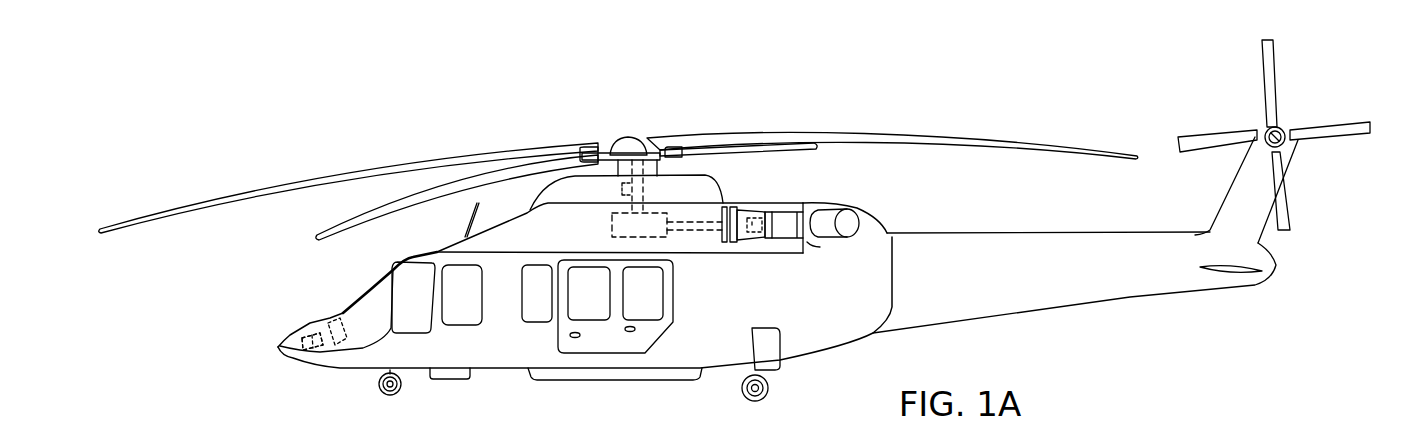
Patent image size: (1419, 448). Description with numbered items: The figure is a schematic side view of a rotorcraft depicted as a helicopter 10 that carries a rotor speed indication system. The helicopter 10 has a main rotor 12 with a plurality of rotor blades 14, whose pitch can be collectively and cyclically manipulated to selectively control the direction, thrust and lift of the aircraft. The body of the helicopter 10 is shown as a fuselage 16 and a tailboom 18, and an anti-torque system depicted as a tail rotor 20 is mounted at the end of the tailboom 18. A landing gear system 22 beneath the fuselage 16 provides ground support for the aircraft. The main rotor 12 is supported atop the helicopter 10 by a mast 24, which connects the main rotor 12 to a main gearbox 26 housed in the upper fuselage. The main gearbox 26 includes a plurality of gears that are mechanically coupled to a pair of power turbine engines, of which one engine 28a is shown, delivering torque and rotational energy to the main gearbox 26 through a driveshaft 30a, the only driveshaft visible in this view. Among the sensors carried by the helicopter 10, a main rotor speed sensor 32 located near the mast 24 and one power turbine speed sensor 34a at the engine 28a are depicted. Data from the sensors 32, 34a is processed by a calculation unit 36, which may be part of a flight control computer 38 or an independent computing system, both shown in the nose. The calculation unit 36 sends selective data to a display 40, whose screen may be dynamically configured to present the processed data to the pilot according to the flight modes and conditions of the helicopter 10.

The helicopter 10 is at (514, 110).
The main rotor 12 is at (940, 137).
The rotor blades 14 is at (785, 153).
The fuselage 16 is at (322, 369).
The tailboom 18 is at (1133, 297).
The tail rotor 20 is at (1335, 120).
The landing gear system 22 is at (770, 392).
The mast 24 is at (598, 147).
The main gearbox 26 is at (640, 237).
The engine 28a is at (795, 242).
The driveshaft 30a is at (693, 232).
The main rotor speed sensor 32 is at (620, 187).
The power turbine speed sensor 34a is at (747, 243).
The calculation unit 36 is at (287, 342).
The flight control computer 38 is at (310, 318).
The display 40 is at (333, 317).